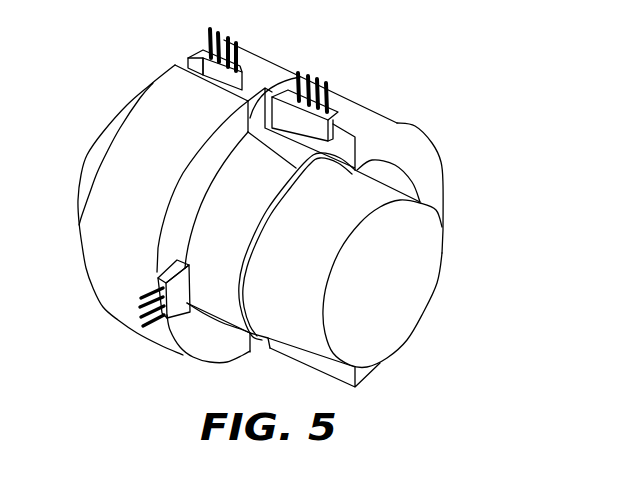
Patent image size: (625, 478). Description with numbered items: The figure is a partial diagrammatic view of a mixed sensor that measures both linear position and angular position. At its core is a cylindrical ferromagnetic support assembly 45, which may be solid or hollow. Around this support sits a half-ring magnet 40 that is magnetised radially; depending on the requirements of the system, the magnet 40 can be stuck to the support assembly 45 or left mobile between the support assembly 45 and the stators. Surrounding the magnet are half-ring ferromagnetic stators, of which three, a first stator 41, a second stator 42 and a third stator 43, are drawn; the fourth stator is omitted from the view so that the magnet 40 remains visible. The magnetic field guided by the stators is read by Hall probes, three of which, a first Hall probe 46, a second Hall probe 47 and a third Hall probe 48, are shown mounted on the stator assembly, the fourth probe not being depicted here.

The half-ring magnet 40 is at (222, 308).
The half-ring ferromagnetic stator 41 is at (95, 250).
The half-ring ferromagnetic stator 42 is at (265, 67).
The half-ring ferromagnetic stator 43 is at (425, 160).
The cylindrical ferromagnetic support assembly 45 is at (414, 305).
The Hall probe 46 is at (230, 44).
The Hall probe 47 is at (330, 90).
The Hall probe 48 is at (146, 333).